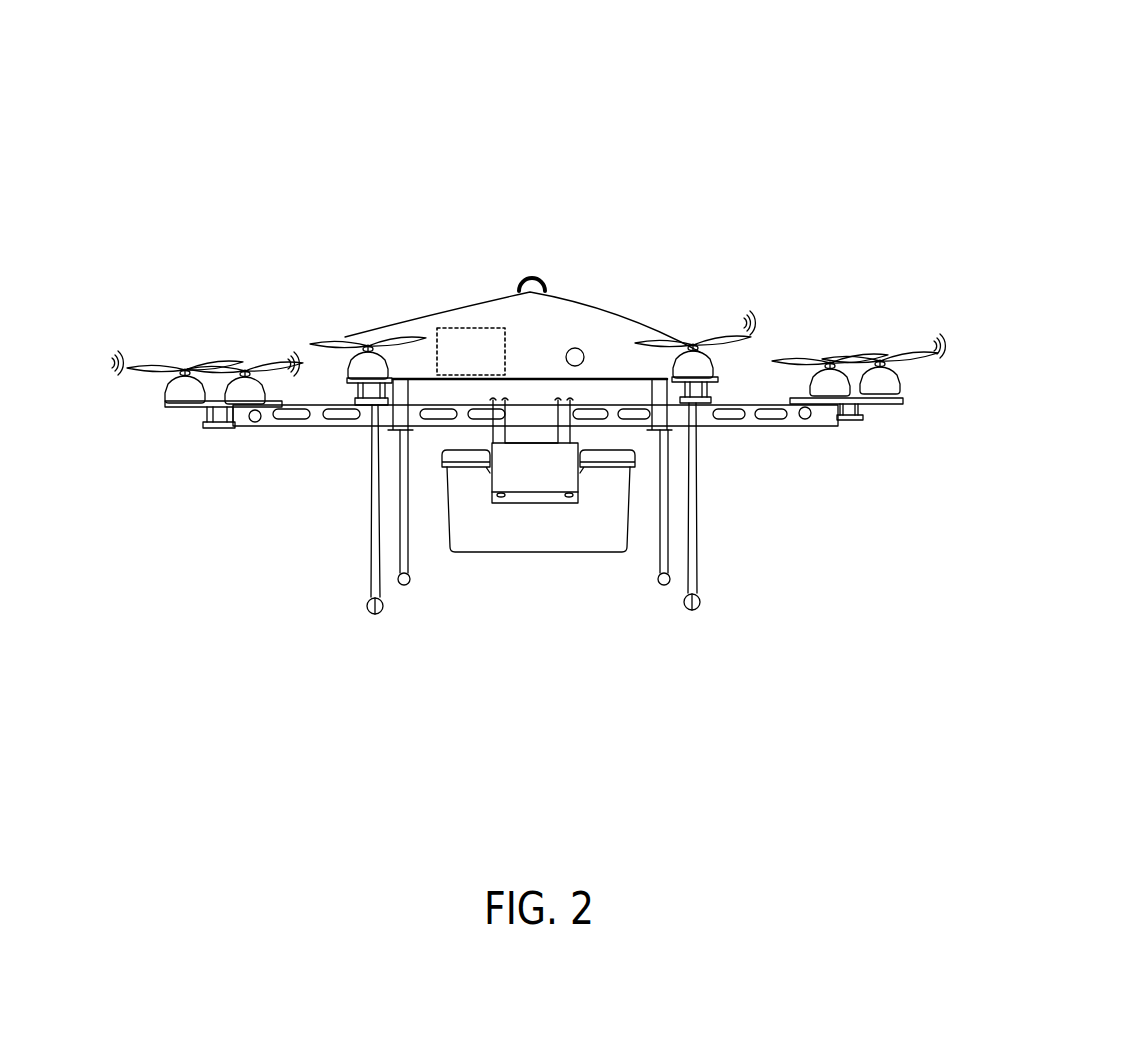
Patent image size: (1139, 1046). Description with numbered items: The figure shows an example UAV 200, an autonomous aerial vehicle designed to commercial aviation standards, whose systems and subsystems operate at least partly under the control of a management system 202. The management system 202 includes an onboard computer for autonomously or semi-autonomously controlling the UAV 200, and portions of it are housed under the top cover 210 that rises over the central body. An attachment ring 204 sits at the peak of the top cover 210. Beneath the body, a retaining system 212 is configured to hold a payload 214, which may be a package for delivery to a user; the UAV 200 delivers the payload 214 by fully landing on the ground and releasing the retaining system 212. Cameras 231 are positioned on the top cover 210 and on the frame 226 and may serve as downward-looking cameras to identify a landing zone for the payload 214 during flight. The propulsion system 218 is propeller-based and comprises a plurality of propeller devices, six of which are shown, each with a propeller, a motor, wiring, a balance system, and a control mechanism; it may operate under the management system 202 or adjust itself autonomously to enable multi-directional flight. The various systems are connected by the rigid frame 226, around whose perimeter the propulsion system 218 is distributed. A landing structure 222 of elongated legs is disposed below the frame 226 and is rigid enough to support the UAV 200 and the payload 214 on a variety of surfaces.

The UAV 200 is at (1043, 112).
The management system 202 is at (440, 328).
The attachment ring 204 is at (541, 270).
The top cover 210 is at (573, 300).
The retaining system 212 is at (612, 486).
The payload 214 is at (588, 554).
The propulsion system 218 is at (140, 423).
The landing structure 222 is at (348, 544).
The frame 226 is at (746, 427).
The cameras 231 is at (581, 349).